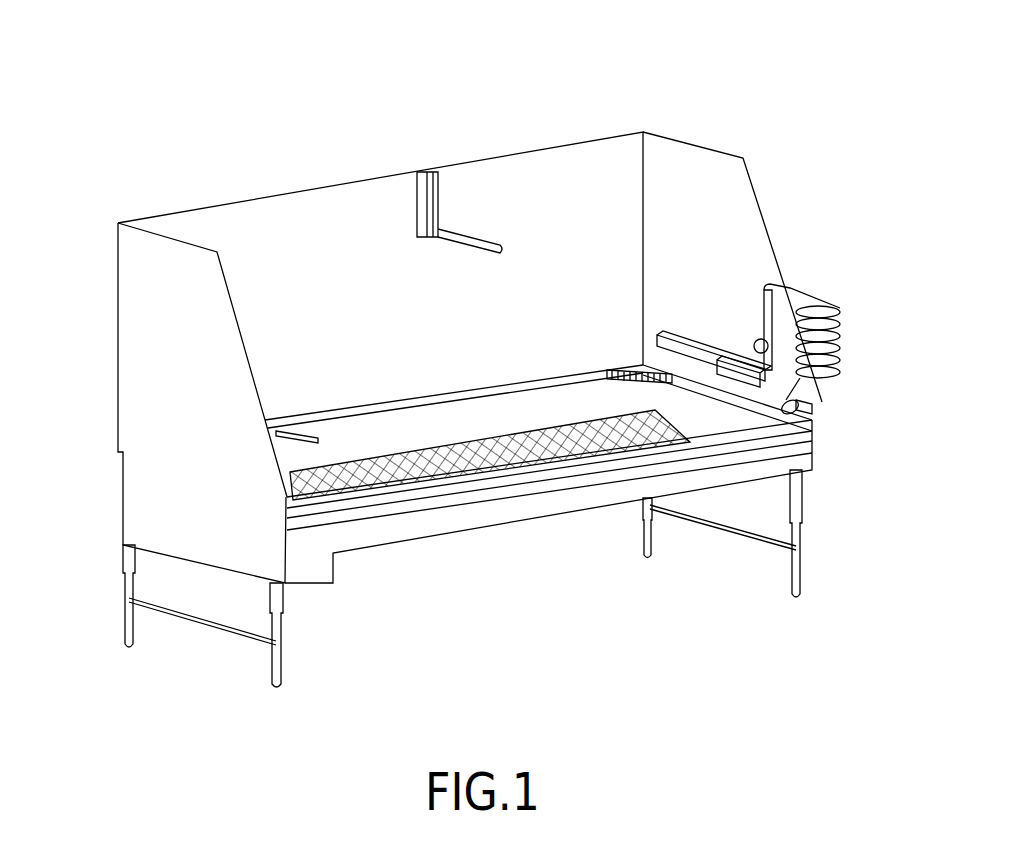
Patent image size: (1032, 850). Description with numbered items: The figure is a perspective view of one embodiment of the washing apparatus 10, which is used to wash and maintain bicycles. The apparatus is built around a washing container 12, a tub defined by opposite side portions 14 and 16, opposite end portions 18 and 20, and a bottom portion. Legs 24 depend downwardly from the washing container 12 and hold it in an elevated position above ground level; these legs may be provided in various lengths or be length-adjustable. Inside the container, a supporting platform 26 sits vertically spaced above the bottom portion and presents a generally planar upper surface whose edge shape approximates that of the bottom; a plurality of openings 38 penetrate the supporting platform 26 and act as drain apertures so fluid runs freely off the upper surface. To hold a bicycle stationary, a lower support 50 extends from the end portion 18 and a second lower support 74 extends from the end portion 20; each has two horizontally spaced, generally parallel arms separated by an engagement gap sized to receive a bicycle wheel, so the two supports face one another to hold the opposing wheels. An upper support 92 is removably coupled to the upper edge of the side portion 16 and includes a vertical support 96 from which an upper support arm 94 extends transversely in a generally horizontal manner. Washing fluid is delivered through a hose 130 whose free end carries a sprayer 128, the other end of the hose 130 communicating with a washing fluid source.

The washing apparatus 10 is at (136, 112).
The washing container 12 is at (592, 232).
The side portion 14 is at (410, 527).
The side portion 16 is at (330, 204).
The end portion 18 is at (147, 374).
The end portion 20 is at (740, 200).
The legs 24 is at (280, 603).
The supporting platform 26 is at (505, 470).
The openings 38 is at (596, 432).
The lower support 50 is at (348, 432).
The second lower support 74 is at (690, 392).
The upper support 92 is at (458, 185).
The upper support arm 94 is at (465, 245).
The vertical support 96 is at (420, 210).
The sprayer 128 is at (810, 420).
The hose 130 is at (845, 342).